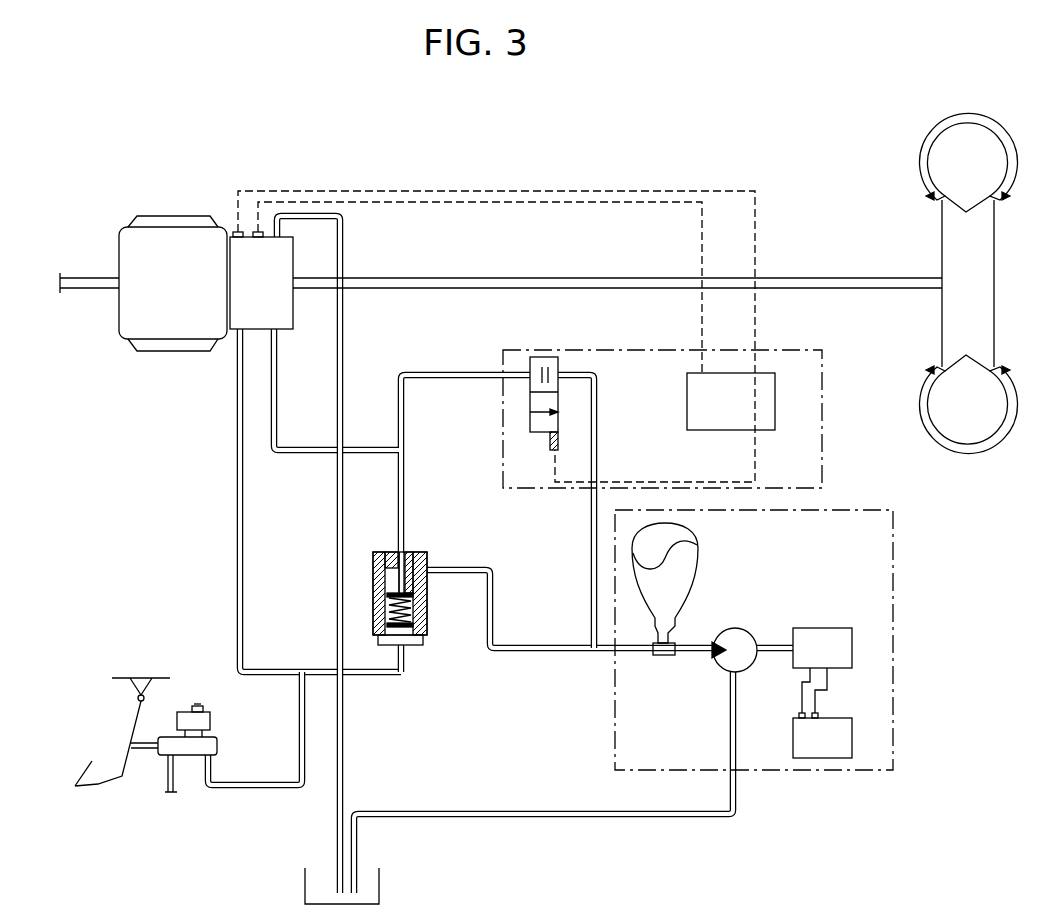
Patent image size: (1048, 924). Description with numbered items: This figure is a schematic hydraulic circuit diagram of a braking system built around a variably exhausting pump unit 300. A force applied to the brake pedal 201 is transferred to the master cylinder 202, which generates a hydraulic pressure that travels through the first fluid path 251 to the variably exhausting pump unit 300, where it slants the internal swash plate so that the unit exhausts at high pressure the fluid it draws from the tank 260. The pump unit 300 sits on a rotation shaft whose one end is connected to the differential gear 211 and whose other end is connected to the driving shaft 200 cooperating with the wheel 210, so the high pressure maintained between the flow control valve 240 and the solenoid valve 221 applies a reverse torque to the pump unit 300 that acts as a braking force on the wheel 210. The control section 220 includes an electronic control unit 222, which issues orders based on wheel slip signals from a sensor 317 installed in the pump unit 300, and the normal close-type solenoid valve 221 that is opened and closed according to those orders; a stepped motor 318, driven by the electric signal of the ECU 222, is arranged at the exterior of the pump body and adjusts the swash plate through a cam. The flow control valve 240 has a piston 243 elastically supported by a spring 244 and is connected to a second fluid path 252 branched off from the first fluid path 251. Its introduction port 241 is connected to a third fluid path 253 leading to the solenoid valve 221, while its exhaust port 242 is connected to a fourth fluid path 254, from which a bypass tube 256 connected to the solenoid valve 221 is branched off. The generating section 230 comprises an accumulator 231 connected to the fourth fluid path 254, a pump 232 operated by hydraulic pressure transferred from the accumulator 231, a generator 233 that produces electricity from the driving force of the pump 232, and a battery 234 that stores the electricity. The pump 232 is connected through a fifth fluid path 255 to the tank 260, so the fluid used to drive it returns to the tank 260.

The driving shaft 200 is at (535, 280).
The brake pedal 201 is at (135, 722).
The master cylinder 202 is at (168, 740).
The wheel 210 is at (967, 450).
The differential gear 211 is at (168, 235).
The control section 220 is at (698, 395).
The solenoid valve 221 is at (558, 362).
The electronic control unit 222 is at (775, 395).
The generating section 230 is at (795, 668).
The accumulator 231 is at (692, 557).
The pump 232 is at (738, 628).
The generator 233 is at (827, 633).
The battery 234 is at (823, 757).
The flow control valve 240 is at (414, 594).
The introduction port 241 is at (395, 552).
The exhaust port 242 is at (428, 554).
The piston 243 is at (413, 594).
The spring 244 is at (415, 624).
The first fluid path 251 is at (237, 497).
The second fluid path 252 is at (357, 677).
The third fluid path 253 is at (300, 452).
The fourth fluid path 254 is at (542, 652).
The fifth fluid path 255 is at (592, 817).
The bypass tube 256 is at (597, 430).
The tank 260 is at (380, 887).
The variably exhausting pump unit 300 is at (235, 323).
The sensor 317 is at (262, 230).
The stepped motor 318 is at (235, 230).